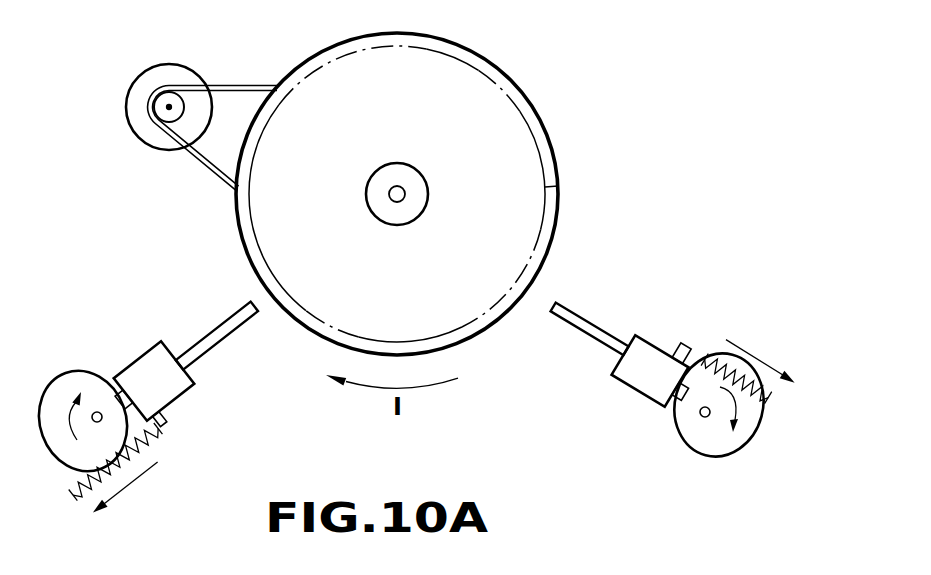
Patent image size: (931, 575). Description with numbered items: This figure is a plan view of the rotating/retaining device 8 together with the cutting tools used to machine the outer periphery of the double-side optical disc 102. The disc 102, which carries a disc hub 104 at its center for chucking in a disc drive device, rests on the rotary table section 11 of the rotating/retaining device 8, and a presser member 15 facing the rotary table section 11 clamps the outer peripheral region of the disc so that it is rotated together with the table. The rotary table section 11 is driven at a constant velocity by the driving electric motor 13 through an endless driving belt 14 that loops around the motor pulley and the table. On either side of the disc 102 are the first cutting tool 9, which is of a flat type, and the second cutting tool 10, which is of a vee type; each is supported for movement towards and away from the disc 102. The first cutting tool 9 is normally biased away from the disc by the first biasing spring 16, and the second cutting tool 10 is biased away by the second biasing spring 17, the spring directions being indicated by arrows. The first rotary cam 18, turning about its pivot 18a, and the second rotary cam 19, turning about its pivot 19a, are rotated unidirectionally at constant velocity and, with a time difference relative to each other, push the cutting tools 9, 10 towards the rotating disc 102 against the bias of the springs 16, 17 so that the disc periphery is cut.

The rotating/retaining device 8 is at (268, 60).
The first cutting tool 9 is at (208, 338).
The second cutting tool 10 is at (600, 332).
The rotary table section 11 is at (558, 186).
The driving electric motor 13 is at (165, 76).
The endless driving belt 14 is at (207, 170).
The presser member 15 is at (480, 68).
The first biasing spring 16 is at (150, 443).
The second biasing spring 17 is at (772, 398).
The first rotary cam 18 is at (63, 453).
The roller shaft 18a is at (97, 412).
The second rotary cam 19 is at (715, 437).
The roller shaft 19a is at (700, 413).
The double-side optical disc 102 is at (548, 114).
The disc hub 104 is at (412, 182).